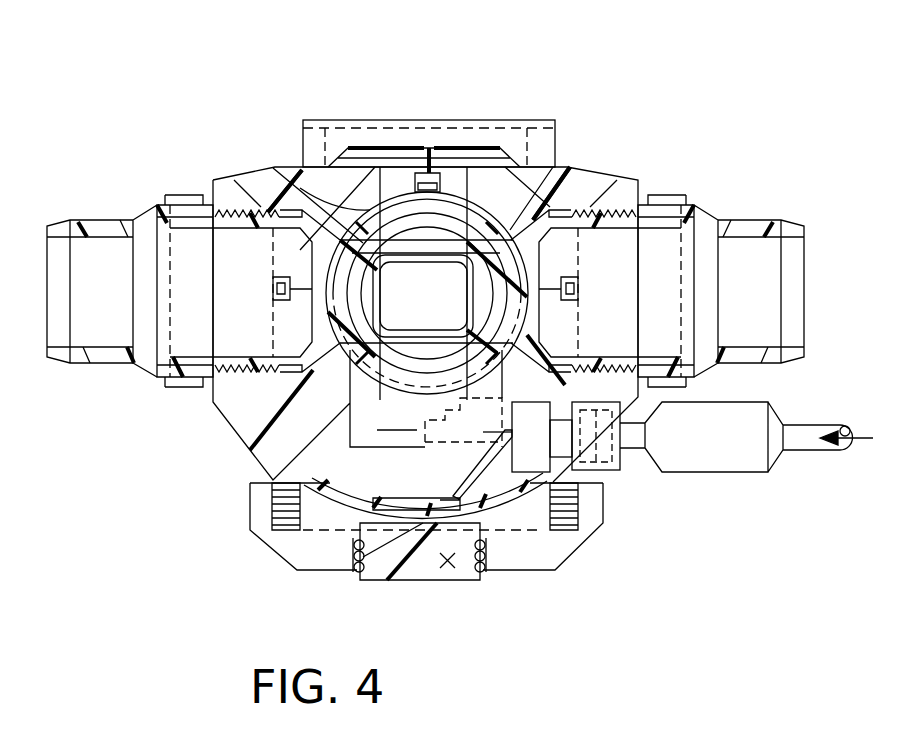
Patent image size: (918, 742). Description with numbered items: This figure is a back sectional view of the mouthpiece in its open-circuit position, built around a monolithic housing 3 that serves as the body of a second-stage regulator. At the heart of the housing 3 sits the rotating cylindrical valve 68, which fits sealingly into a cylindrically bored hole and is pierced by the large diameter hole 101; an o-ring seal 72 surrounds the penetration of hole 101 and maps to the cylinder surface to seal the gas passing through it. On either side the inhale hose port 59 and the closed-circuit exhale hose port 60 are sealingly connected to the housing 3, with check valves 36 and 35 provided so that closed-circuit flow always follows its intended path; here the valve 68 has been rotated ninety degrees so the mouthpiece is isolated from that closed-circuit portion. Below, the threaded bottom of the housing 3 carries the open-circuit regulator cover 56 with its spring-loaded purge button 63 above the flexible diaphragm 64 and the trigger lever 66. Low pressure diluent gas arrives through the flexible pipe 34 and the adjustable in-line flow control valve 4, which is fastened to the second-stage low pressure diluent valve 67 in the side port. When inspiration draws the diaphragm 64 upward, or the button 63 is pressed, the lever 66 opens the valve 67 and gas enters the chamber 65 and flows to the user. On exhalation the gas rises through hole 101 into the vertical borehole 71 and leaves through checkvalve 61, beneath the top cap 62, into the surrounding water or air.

The monolithic housing 3 is at (250, 440).
The adjustable in-line flow control valve 4 is at (680, 462).
The flexible pipe 34 is at (792, 432).
The check valve 35 is at (597, 268).
The check valve 36 is at (313, 258).
The second-stage open-circuit regulator cover 56 is at (337, 557).
The inhale hose port 59 is at (110, 228).
The closed-circuit exhale hose port 60 is at (788, 225).
The checkvalve 61 is at (418, 150).
The top cap 62 is at (538, 146).
The spring-loaded purge button 63 is at (453, 572).
The flexible diaphragm 64 is at (478, 515).
The chamber 65 is at (439, 422).
The trigger lever 66 is at (450, 478).
The second-stage low pressure diluent valve 67 is at (590, 440).
The rotating cylindrical valve 68 is at (292, 188).
The vertical borehole 71 is at (452, 180).
The o-ring seal 72 is at (567, 170).
The large diameter hole 101 is at (415, 217).